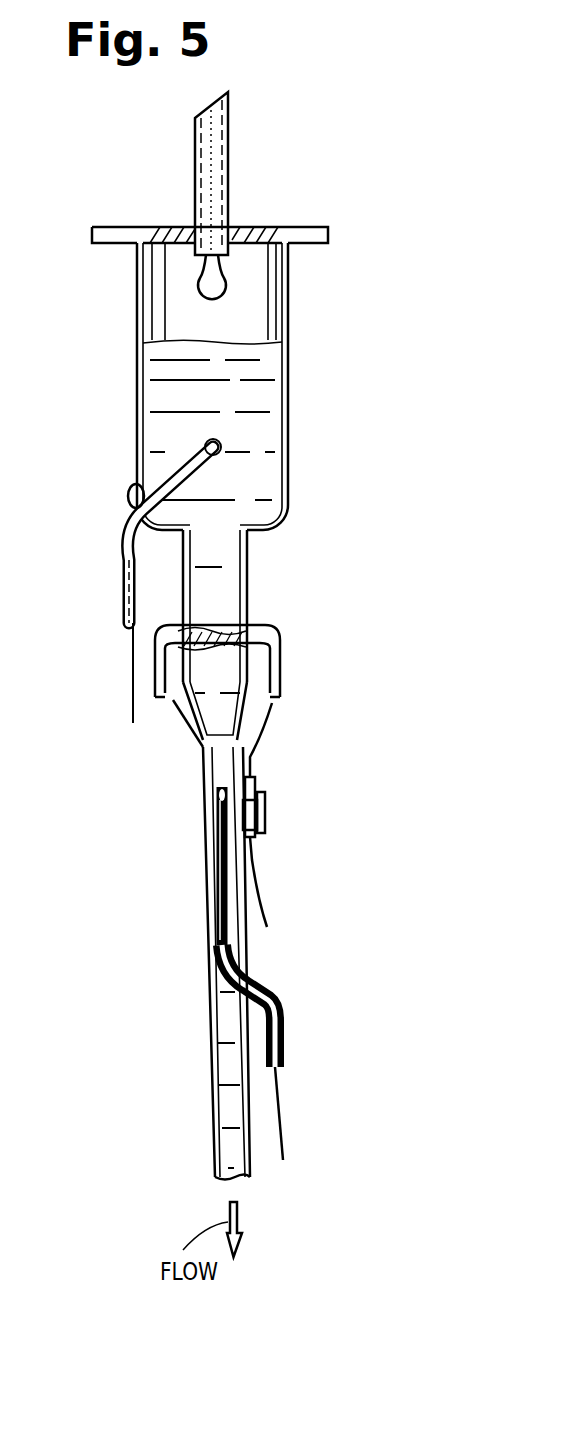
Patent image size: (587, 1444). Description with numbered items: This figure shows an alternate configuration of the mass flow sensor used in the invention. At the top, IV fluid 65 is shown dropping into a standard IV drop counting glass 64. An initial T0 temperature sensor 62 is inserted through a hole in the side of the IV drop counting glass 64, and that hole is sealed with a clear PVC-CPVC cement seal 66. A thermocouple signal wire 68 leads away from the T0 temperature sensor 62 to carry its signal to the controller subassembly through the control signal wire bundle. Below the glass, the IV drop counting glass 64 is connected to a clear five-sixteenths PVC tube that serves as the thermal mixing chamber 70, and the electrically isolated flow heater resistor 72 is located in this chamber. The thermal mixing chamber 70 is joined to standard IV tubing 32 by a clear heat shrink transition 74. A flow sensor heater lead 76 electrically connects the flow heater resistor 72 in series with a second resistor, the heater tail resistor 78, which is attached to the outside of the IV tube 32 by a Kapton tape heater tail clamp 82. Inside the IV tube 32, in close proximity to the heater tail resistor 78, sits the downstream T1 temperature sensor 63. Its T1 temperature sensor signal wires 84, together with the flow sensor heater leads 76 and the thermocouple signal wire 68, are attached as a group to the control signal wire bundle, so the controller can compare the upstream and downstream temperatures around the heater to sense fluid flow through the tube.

The IV tube 32 is at (217, 1140).
The T0 temperature sensor 62 is at (197, 438).
The downstream T1 temperature sensor 63 is at (213, 777).
The IV drop counting glass 64 is at (288, 387).
The IV fluid 65 is at (225, 292).
The cement seal 66 is at (128, 495).
The thermocouple signal wire 68 is at (132, 677).
The thermal mixing chamber 70 is at (243, 577).
The flow heater resistor 72 is at (213, 625).
The heat shrink transition 74 is at (190, 713).
The flow sensor heater lead 76 is at (270, 705).
The heater tail resistor 78 is at (253, 780).
The heater tail clamp 82 is at (268, 813).
The T1 temperature sensor signal wires 84 is at (280, 1117).